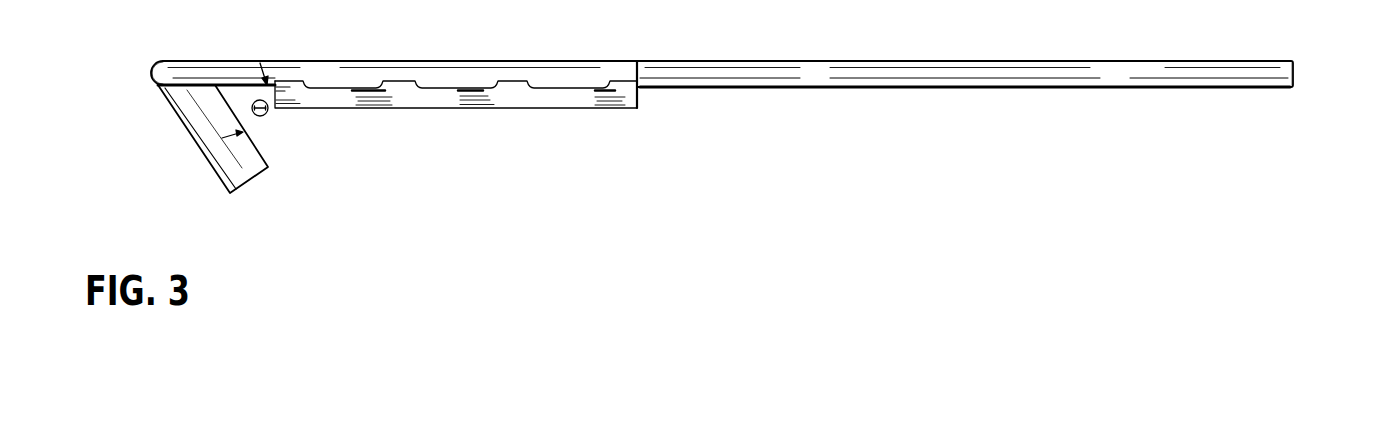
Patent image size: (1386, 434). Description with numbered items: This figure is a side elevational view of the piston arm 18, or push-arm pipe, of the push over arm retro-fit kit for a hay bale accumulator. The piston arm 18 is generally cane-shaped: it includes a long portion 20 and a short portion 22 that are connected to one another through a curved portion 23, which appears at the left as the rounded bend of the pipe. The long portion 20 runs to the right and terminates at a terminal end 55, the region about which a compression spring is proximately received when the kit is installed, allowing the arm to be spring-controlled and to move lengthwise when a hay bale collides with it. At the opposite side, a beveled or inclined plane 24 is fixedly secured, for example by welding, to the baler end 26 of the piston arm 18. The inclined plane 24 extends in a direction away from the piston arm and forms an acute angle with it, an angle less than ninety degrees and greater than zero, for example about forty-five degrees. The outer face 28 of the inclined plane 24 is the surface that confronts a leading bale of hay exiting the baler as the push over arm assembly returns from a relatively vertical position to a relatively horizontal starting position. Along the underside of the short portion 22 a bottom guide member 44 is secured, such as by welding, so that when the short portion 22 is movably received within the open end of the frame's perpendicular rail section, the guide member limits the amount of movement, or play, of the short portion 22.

The piston arm 18 is at (313, 61).
The long portion 20 is at (808, 60).
The short portion 22 is at (547, 68).
The curved portion 23 is at (150, 72).
The inclined plane 24 is at (263, 147).
The baler end 26 is at (141, 73).
The outer face 28 is at (192, 141).
The bottom guide member 44 is at (422, 109).
The terminal end 55 is at (1250, 60).